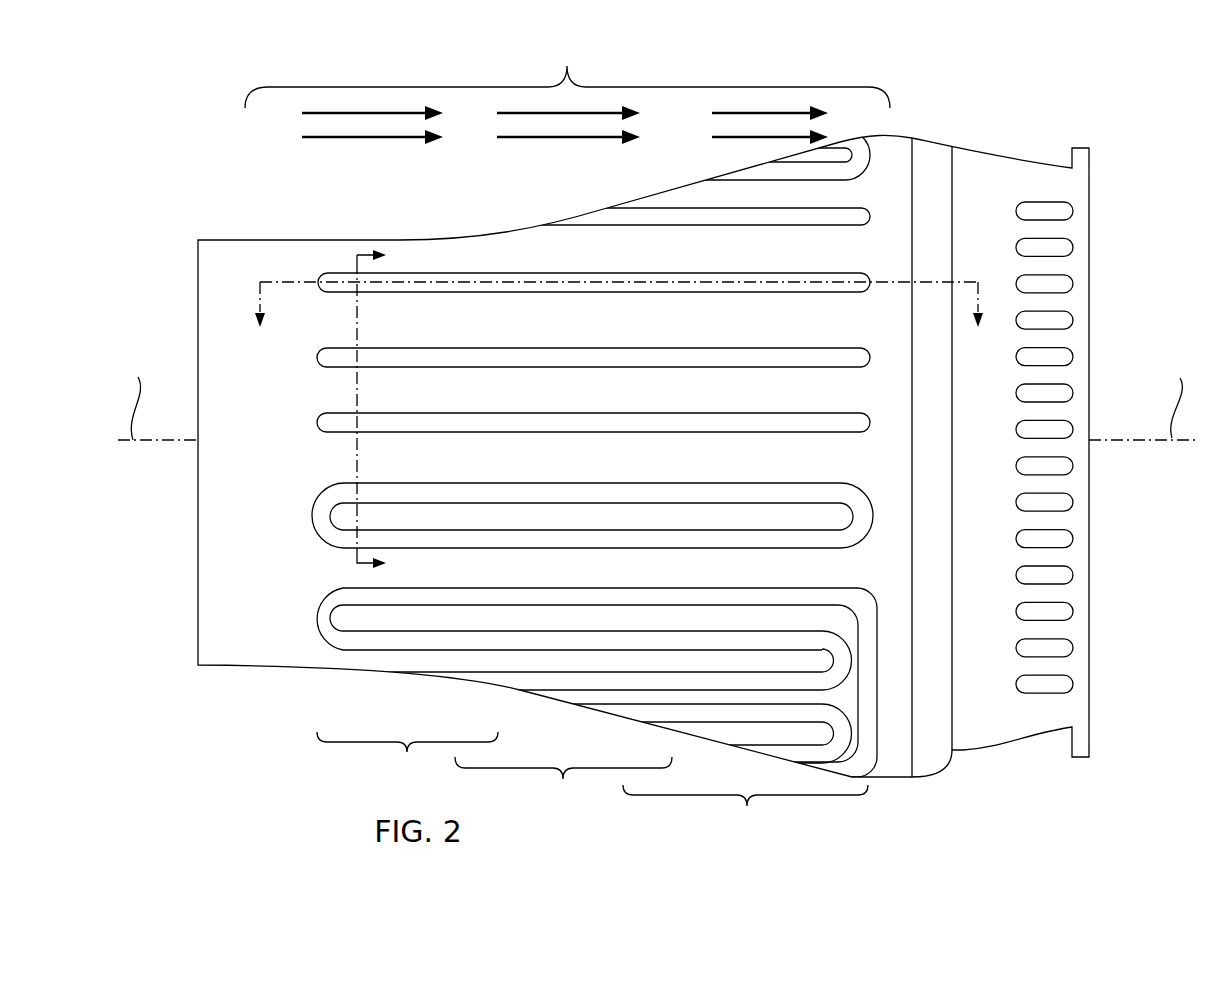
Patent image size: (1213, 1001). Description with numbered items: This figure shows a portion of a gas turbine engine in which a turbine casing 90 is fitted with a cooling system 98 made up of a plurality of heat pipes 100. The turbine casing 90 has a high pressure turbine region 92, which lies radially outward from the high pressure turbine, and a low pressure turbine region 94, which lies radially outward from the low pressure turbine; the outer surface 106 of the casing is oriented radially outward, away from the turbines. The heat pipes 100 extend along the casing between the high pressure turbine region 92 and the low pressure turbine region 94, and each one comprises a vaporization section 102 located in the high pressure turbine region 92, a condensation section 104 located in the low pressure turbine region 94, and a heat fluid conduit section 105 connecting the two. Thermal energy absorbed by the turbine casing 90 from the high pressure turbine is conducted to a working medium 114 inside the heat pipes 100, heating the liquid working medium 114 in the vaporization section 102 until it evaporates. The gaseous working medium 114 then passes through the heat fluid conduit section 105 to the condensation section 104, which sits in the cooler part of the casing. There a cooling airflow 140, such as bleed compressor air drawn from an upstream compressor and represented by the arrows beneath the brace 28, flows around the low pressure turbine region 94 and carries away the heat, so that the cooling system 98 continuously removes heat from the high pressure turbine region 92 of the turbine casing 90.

The bypass airflow 28 is at (567, 73).
The cooling airflow 140 is at (347, 138).
The turbine casing 90 is at (247, 613).
The cooling system 98 is at (886, 541).
The outer surface 106 is at (259, 469).
The heat pipes 100 is at (857, 173).
The working medium 114 is at (787, 217).
The high pressure turbine region 92 is at (407, 758).
The vaporization section 102 is at (417, 742).
The heat fluid conduit section 105 is at (563, 787).
The low pressure turbine region 94 is at (745, 812).
The condensation section 104 is at (757, 795).